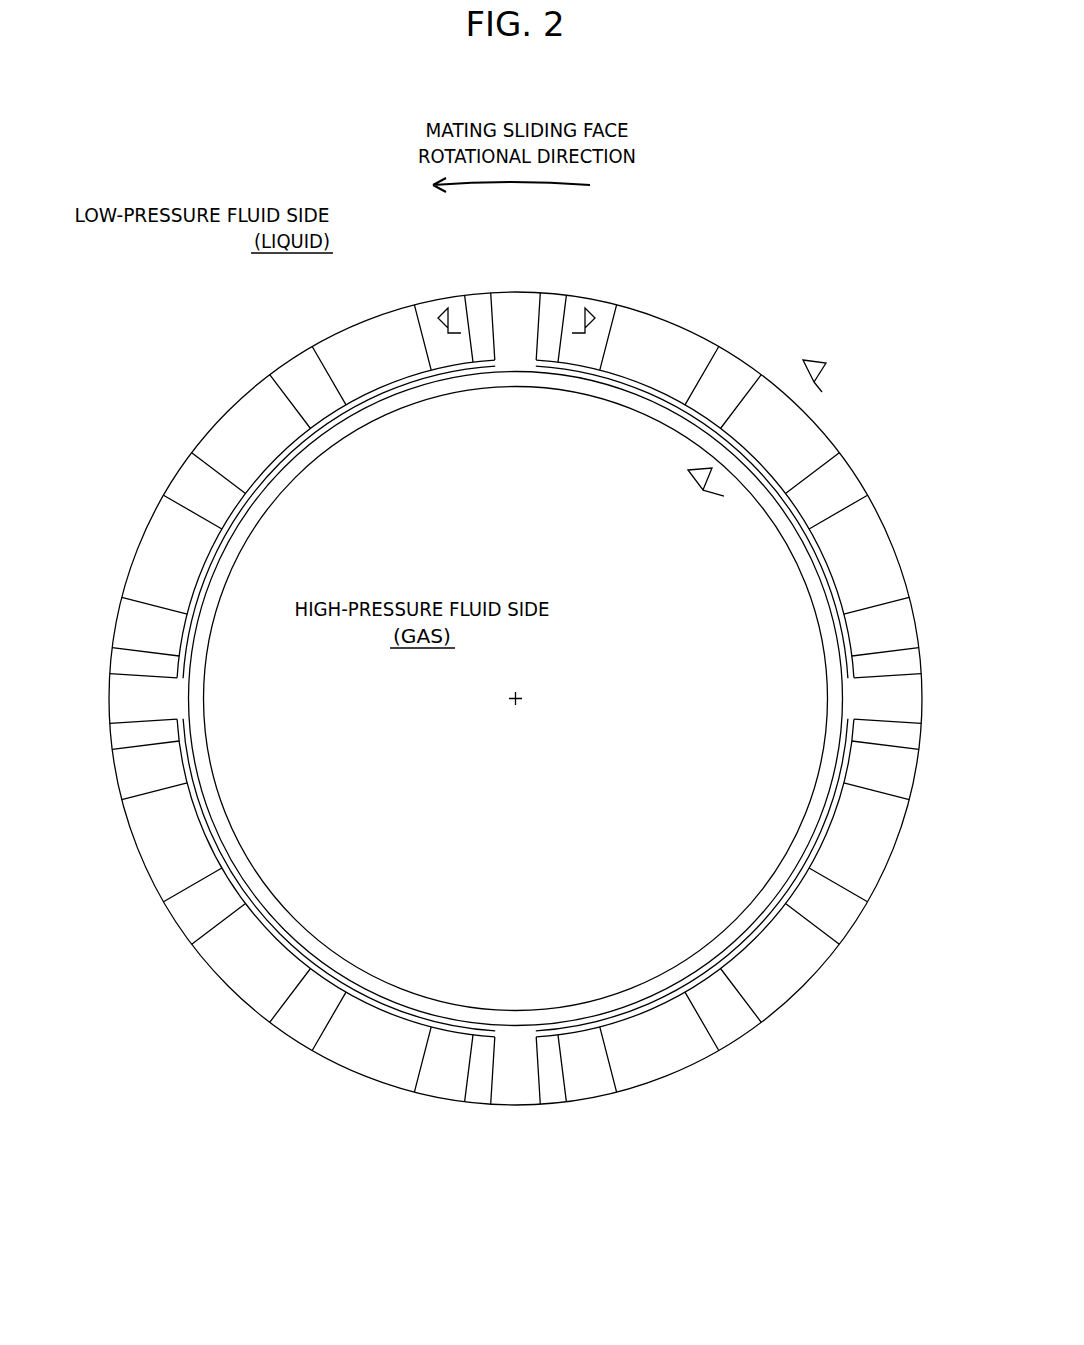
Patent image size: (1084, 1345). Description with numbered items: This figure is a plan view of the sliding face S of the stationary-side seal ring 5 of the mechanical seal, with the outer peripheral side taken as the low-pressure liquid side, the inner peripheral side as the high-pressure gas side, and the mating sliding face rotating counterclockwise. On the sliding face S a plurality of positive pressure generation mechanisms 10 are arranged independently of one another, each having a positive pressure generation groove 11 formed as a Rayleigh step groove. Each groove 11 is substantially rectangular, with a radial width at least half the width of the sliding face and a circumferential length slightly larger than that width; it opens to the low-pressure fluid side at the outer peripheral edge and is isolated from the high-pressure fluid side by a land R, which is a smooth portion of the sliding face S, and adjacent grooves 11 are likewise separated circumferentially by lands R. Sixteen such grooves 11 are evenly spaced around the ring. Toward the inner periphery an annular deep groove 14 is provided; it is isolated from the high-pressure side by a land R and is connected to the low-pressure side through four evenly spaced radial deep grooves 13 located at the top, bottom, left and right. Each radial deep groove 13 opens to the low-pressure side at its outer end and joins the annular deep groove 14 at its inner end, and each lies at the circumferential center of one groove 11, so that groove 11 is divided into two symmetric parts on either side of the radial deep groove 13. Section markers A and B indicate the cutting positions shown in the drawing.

The stationary-side seal ring 5 is at (738, 343).
The sliding face S is at (752, 342).
The positive pressure generation mechanism 10 is at (366, 306).
The positive pressure generation groove 11 is at (471, 289).
The radial deep groove 13 is at (530, 300).
The annular deep groove 14 is at (280, 475).
The land R is at (302, 385).
The section A- A is at (518, 338).
The section B- B is at (767, 446).